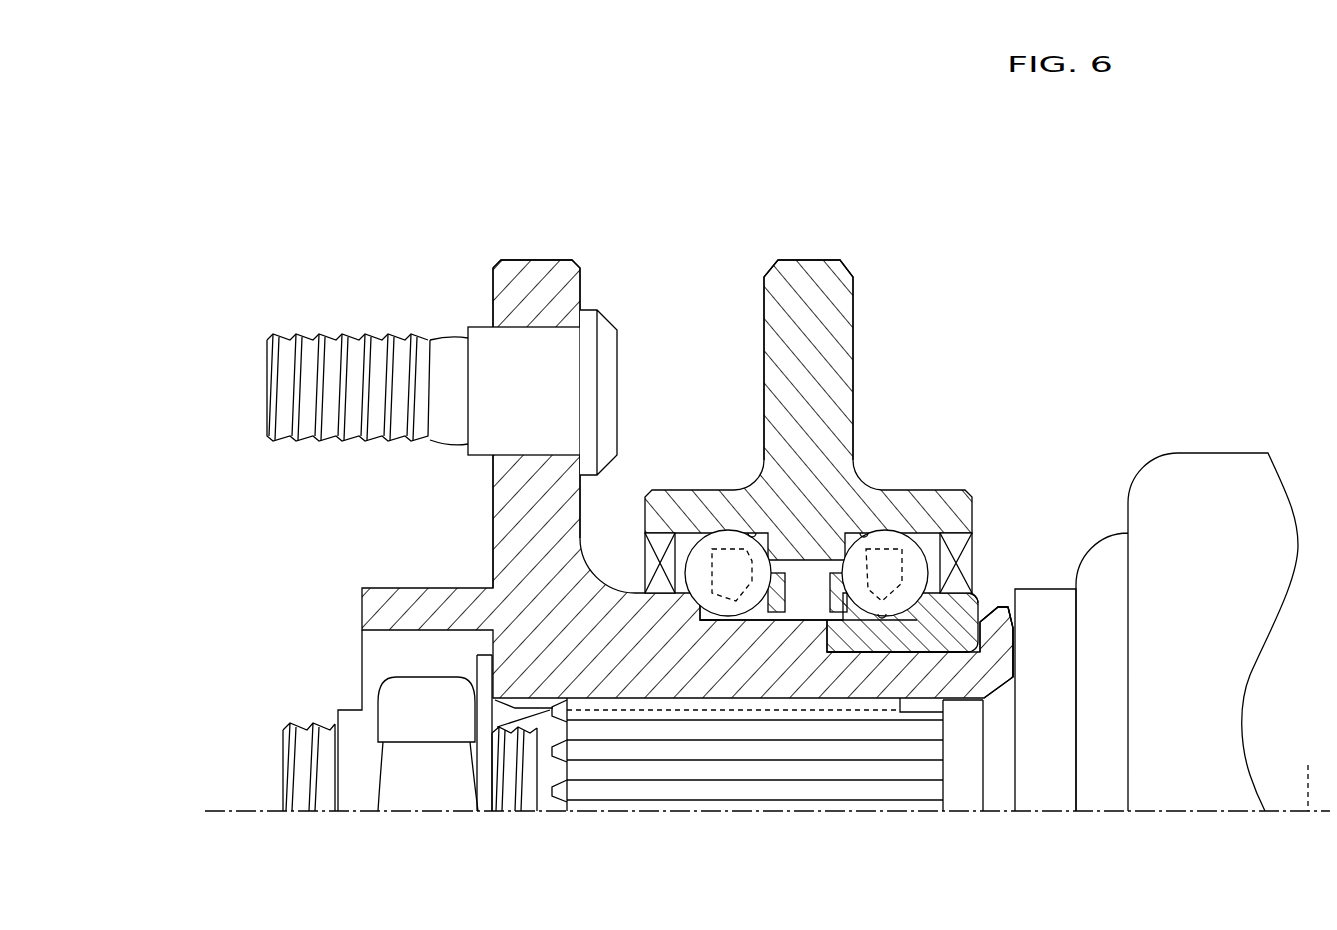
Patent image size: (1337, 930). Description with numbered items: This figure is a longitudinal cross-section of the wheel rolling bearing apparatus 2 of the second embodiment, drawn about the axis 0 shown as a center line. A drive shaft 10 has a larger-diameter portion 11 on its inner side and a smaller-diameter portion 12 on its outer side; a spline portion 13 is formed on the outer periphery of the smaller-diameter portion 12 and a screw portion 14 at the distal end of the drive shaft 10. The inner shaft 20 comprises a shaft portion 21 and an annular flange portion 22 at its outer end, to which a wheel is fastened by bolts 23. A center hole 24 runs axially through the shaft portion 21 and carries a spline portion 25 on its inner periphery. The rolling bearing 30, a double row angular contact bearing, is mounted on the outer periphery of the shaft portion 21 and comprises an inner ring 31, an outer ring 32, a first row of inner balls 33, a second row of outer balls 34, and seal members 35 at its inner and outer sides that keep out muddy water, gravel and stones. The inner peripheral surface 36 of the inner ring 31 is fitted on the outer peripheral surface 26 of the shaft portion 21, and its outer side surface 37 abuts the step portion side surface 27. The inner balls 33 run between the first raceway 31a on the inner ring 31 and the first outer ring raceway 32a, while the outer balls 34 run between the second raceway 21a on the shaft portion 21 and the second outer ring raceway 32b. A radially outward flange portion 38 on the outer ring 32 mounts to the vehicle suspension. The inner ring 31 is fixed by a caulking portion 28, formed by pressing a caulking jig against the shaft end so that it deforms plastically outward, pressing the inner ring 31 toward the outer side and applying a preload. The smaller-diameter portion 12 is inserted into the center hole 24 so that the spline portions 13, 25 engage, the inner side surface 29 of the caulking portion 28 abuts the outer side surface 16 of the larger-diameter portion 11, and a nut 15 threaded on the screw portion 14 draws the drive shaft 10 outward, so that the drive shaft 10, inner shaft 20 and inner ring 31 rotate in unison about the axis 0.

The wheel rolling bearing apparatus 2 is at (901, 241).
The drive shaft 10 is at (1140, 431).
The larger-diameter portion 11 is at (1048, 589).
The smaller-diameter portion 12 is at (544, 803).
The spline portion 13 is at (702, 770).
The screw portion 14 is at (330, 803).
The nut 15 is at (428, 792).
The outer side surface 16 is at (1016, 664).
The inner shaft 20 is at (593, 520).
The shaft portion 21 is at (748, 672).
The second raceway 21a is at (700, 608).
The flange portion 22 is at (527, 260).
The bolts 23 is at (620, 350).
The center hole 24 is at (660, 700).
The spline portion 25 is at (820, 712).
The outer peripheral surface 26 is at (940, 650).
The step portion side surface 27 is at (814, 624).
The caulking portion 28 is at (991, 610).
The inner side surface 29 is at (1016, 635).
The rolling bearing 30 is at (807, 476).
The inner ring 31 is at (948, 655).
The first raceway 31a is at (878, 612).
The outer ring 32 is at (851, 386).
The first outer ring raceway 32a is at (864, 533).
The second outer ring raceway 32b is at (752, 533).
The inner balls 33 is at (890, 533).
The outer balls 34 is at (727, 530).
The seal members 35 is at (645, 565).
The inner peripheral surface 36 is at (905, 655).
The outer side surface 37 is at (810, 624).
The flange portion 38 is at (853, 328).
The axis 0 is at (1306, 774).